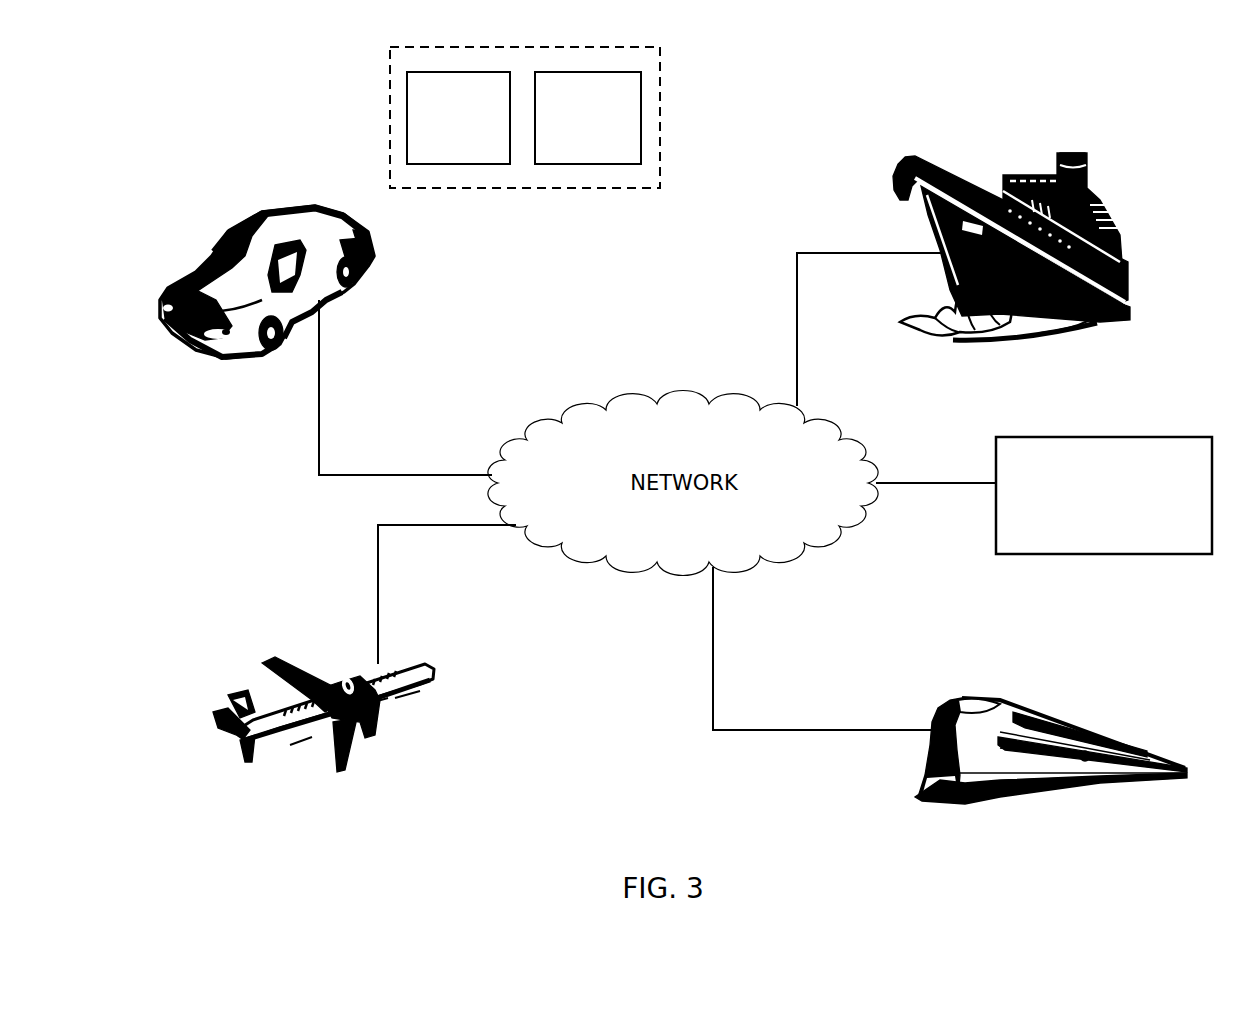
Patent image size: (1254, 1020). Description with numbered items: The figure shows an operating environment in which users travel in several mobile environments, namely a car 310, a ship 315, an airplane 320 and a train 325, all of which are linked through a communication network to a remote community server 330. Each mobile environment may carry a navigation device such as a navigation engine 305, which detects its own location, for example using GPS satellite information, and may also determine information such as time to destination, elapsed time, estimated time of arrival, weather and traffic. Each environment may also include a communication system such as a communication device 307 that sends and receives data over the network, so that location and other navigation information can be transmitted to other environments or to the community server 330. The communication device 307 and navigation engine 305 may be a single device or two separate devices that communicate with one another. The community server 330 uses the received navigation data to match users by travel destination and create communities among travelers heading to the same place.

The navigation engine 305 is at (414, 107).
The communication device 307 is at (630, 82).
The car 310 is at (372, 248).
The ship 315 is at (1123, 278).
The airplane 320 is at (435, 671).
The train 325 is at (1093, 724).
The community server 330 is at (1104, 495).